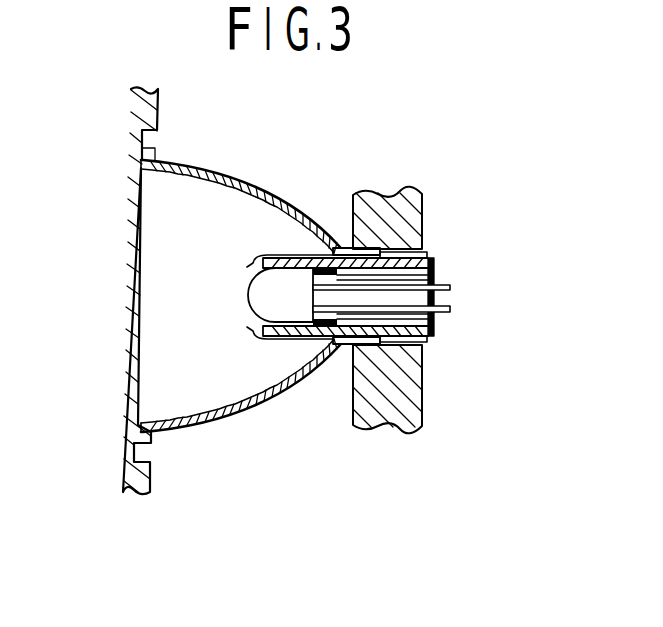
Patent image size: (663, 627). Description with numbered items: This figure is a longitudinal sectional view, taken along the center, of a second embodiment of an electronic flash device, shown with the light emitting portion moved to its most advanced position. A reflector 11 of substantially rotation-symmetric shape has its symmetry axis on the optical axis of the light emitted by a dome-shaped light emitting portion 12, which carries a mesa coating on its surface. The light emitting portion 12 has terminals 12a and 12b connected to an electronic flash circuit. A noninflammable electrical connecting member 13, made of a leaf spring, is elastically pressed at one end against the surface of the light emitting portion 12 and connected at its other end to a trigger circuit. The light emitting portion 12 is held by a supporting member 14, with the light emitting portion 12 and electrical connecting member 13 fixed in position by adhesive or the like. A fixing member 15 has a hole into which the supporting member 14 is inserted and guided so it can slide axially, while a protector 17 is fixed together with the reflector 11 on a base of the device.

The reflector 11 is at (212, 172).
The light emitting portion 12 is at (273, 286).
The terminal 12a is at (446, 287).
The terminal 12b is at (450, 312).
The electrical connecting member 13 is at (272, 256).
The supporting member 14 is at (433, 256).
The fixing member 15 is at (412, 399).
The protector 17 is at (132, 286).